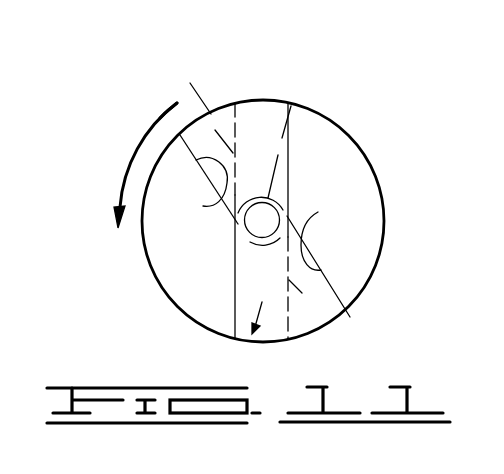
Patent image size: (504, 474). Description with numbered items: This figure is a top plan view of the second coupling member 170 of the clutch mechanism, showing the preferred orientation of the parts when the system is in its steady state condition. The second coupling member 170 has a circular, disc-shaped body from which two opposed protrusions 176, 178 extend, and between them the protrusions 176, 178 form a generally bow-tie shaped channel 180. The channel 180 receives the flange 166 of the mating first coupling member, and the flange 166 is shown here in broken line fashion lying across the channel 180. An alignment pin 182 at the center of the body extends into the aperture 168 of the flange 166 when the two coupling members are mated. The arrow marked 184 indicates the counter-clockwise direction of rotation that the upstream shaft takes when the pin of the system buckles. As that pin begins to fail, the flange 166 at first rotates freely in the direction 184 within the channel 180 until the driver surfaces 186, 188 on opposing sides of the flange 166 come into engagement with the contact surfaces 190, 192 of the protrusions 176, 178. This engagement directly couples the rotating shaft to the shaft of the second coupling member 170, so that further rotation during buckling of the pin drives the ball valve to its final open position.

The flange 166 is at (240, 345).
The aperture 168 is at (302, 90).
The second coupling member 170 is at (148, 101).
The protrusion 176 is at (193, 270).
The protrusion 178 is at (327, 157).
The channel 180 is at (235, 93).
The alignment pin 182 is at (262, 222).
The direction of rotation 184 is at (132, 153).
The driver surface 186 is at (179, 71).
The driver surface 188 is at (343, 319).
The contact surface 190 is at (213, 205).
The contact surface 192 is at (327, 205).